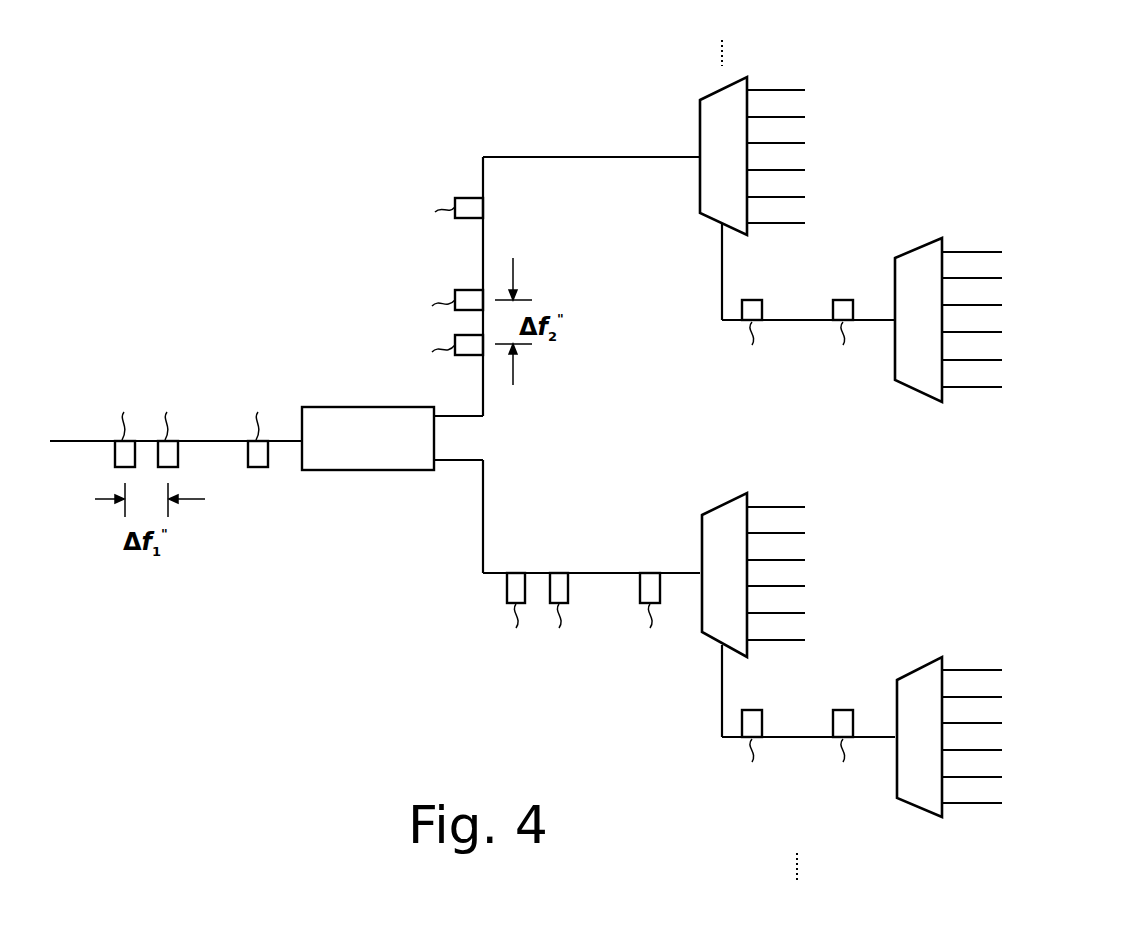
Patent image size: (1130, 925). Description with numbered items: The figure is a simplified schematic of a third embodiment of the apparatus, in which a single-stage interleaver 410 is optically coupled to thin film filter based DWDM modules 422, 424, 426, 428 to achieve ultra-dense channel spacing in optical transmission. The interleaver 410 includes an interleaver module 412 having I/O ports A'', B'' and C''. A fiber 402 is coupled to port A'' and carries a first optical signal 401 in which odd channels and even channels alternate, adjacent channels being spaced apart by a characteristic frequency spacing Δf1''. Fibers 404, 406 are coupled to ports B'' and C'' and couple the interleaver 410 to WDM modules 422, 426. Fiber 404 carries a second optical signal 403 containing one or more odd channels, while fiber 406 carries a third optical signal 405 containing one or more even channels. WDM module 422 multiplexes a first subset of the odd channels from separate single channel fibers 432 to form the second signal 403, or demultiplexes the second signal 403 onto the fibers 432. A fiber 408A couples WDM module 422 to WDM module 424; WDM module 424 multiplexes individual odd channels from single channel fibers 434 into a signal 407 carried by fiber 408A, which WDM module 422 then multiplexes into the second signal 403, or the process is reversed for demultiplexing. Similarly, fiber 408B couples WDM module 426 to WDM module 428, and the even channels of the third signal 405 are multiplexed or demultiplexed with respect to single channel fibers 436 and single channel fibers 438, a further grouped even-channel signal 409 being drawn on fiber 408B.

The first optical signal 401 is at (290, 370).
The fiber 402 is at (70, 442).
The second optical signal 403 is at (392, 195).
The fiber 404 is at (540, 157).
The third optical signal 405 is at (675, 650).
The fiber 406 is at (483, 512).
The signal 407 is at (865, 366).
The fiber 408A is at (722, 290).
The fiber 408B is at (722, 728).
The channel group 18-32 409 is at (865, 783).
The interleaver 410 is at (338, 516).
The interleaver module 412 is at (368, 439).
The WDM module 422 is at (700, 120).
The WDM module 424 is at (895, 278).
The WDM module 426 is at (724, 510).
The WDM module 428 is at (897, 700).
The single channel fibers 432 is at (818, 80).
The single channel fibers 434 is at (1012, 240).
The single channel fibers 436 is at (818, 495).
The single channel fibers 438 is at (1012, 655).